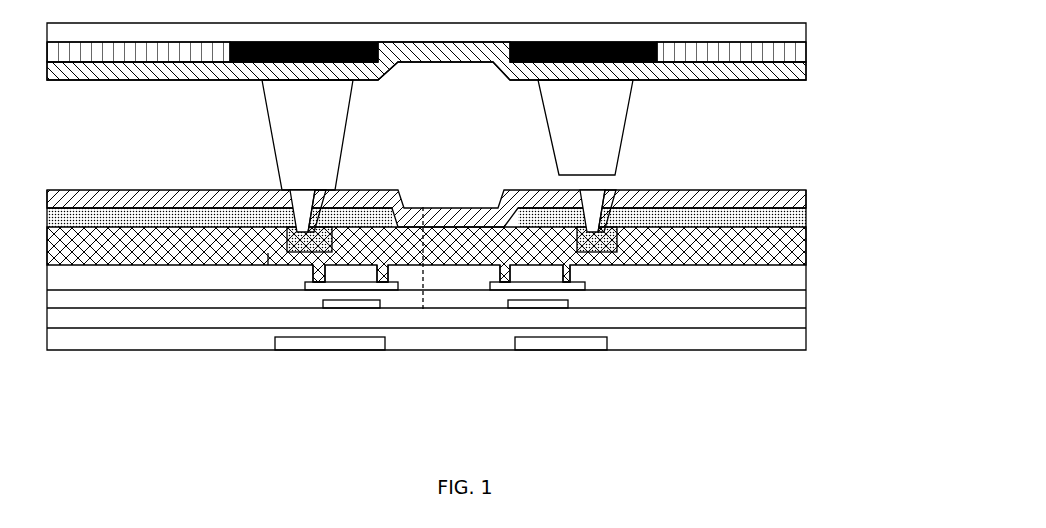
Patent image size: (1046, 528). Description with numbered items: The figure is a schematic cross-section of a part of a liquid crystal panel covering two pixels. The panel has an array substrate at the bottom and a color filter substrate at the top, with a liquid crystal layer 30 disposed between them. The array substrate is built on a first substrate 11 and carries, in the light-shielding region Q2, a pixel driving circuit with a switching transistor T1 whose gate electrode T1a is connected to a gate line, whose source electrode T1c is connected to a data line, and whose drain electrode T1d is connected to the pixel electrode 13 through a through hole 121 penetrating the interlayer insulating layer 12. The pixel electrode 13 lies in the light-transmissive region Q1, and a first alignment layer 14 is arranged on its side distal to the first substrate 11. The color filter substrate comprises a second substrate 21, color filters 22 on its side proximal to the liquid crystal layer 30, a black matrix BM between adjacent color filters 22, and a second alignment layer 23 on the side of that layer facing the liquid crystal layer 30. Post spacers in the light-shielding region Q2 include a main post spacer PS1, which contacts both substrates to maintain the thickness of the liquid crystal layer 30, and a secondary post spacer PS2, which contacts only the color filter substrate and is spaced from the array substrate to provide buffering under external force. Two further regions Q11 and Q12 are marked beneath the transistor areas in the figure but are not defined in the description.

The liquid crystal layer 30 is at (453, 215).
The second substrate 21 is at (782, 38).
The color filter 22 is at (787, 53).
The second alignment layer 23 is at (788, 78).
The black matrix BM is at (443, 52).
The main post spacer PS1 is at (307, 135).
The secondary post spacer PS2 is at (585, 127).
The first substrate 11 is at (787, 318).
The interlayer insulating layer 12 is at (787, 252).
The pixel electrode 13 is at (785, 218).
The first alignment layer 14 is at (777, 205).
The through hole 121 is at (320, 205).
The switching transistor T1 is at (337, 291).
The gate electrode T1a is at (338, 308).
The source electrode T1c is at (398, 258).
The drain electrode T1d is at (290, 260).
The light-transmissive region Q1 is at (441, 362).
The light-shielding region Q2 is at (448, 368).
The first sub-region Q11 is at (330, 343).
The second sub-region Q12 is at (561, 343).